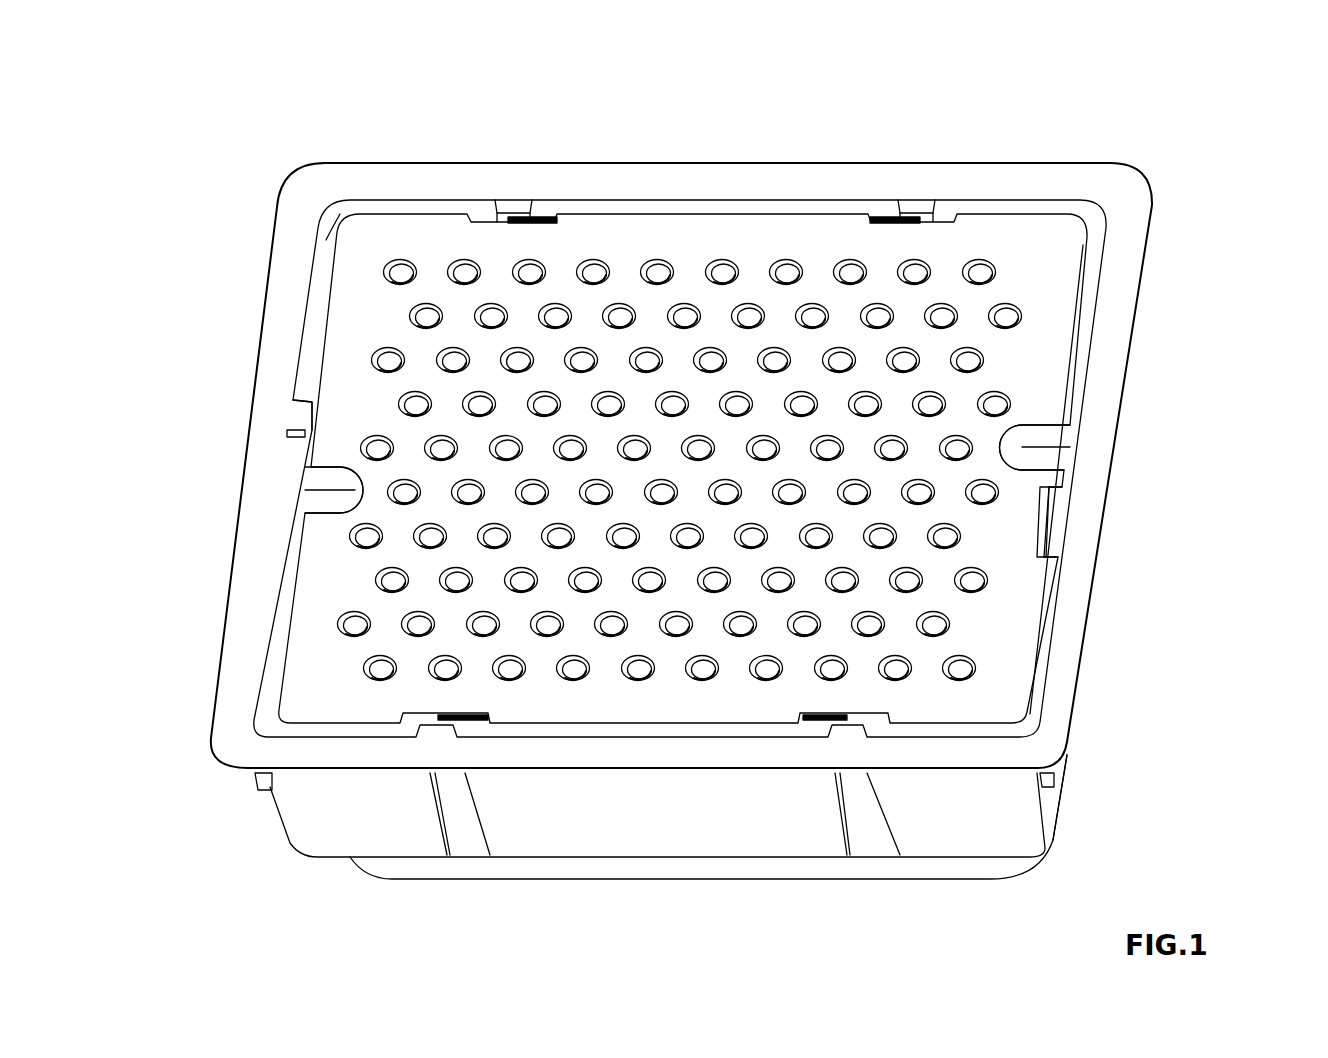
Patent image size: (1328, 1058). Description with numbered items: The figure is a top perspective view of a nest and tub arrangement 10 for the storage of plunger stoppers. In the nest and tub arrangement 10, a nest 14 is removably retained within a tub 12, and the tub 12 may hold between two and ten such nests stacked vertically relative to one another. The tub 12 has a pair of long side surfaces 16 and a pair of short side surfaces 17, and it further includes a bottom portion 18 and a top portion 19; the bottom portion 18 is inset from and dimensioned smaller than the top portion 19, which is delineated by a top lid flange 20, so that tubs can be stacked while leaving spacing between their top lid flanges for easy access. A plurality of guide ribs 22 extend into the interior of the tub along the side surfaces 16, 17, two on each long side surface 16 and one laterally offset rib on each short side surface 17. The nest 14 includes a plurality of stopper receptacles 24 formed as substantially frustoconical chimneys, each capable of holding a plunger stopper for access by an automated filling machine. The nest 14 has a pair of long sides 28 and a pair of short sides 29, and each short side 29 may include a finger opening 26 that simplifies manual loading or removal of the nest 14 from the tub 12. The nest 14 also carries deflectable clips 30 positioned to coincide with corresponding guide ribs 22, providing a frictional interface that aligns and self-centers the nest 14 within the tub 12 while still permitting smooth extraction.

The nest and tub arrangement 10 is at (1247, 128).
The tub 12 is at (717, 430).
The nest 14 is at (680, 255).
The long side surface 16 is at (540, 835).
The short side surface 17 is at (1068, 780).
The bottom portion 18 is at (612, 870).
The top portion 19 is at (1103, 697).
The top lid flange 20 is at (218, 738).
The guide rib 22 is at (510, 208).
The stopper receptacle 24 is at (465, 268).
The finger opening 26 is at (310, 513).
The long side 28 is at (1020, 212).
The short side 29 is at (322, 285).
The deflectable clip 30 is at (540, 218).